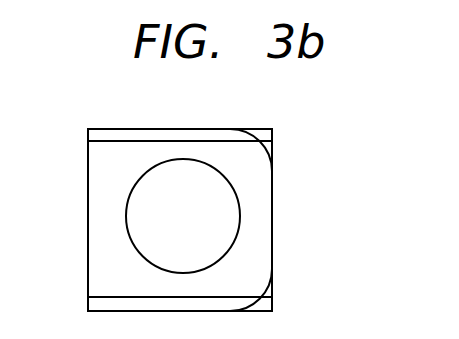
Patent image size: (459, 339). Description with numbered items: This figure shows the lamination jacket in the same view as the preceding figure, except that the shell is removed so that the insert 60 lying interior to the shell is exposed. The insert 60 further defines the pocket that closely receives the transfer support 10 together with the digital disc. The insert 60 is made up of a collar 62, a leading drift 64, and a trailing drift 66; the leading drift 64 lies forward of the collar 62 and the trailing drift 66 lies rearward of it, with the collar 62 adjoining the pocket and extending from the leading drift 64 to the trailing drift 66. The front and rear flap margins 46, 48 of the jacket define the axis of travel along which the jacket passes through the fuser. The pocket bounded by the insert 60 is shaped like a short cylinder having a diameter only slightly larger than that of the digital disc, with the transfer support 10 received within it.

The transfer support 10 is at (273, 140).
The front flap margin 46 is at (284, 233).
The rear flap margin 48 is at (78, 175).
The insert 60 is at (163, 295).
The collar 62 is at (178, 148).
The leading drift 64 is at (274, 196).
The trailing drift 66 is at (108, 236).